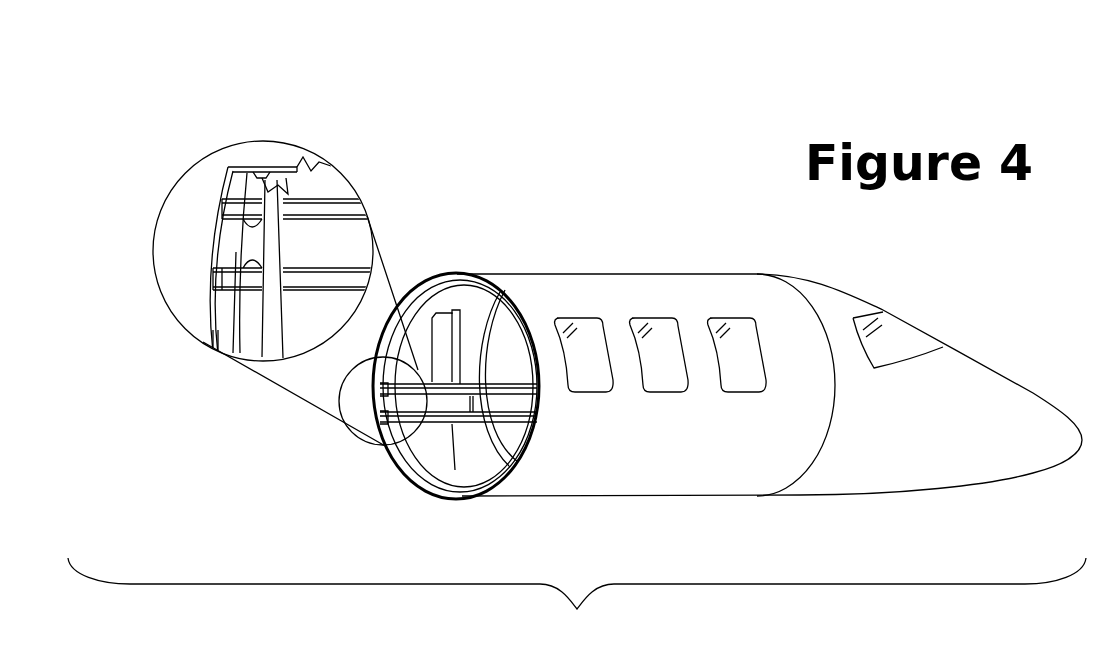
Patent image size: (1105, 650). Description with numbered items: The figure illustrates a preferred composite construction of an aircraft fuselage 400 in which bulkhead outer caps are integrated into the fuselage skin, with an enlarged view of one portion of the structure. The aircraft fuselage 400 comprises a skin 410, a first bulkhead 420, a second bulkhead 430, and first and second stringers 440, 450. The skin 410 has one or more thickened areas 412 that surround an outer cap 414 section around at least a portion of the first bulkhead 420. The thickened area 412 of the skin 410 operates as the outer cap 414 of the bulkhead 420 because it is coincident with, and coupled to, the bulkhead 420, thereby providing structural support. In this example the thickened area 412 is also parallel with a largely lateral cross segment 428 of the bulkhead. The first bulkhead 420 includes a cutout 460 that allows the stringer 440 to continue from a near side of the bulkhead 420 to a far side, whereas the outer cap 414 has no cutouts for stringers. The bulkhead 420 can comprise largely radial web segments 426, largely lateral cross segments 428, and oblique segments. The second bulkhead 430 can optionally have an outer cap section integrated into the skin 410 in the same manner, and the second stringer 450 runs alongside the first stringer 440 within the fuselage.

The aircraft fuselage 400 is at (572, 265).
The skin 410 is at (212, 238).
The thickened area 412 is at (233, 167).
The outer cap 414 is at (257, 173).
The first bulkhead 420 is at (247, 247).
The largely radial web segments 426 is at (286, 178).
The largely lateral cross segment 428 is at (315, 170).
The second bulkhead 430 is at (396, 443).
The first stringer 440 is at (243, 203).
The second stringer 450 is at (460, 311).
The cutout 460 is at (230, 352).